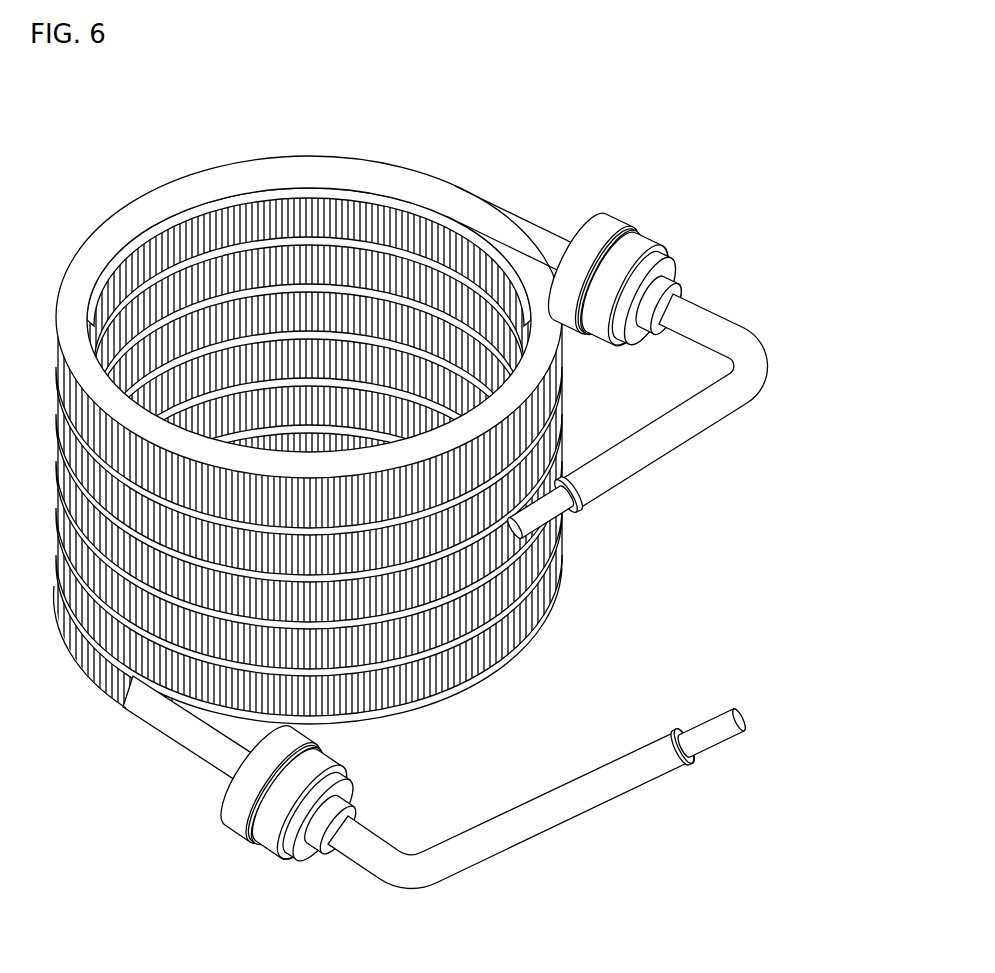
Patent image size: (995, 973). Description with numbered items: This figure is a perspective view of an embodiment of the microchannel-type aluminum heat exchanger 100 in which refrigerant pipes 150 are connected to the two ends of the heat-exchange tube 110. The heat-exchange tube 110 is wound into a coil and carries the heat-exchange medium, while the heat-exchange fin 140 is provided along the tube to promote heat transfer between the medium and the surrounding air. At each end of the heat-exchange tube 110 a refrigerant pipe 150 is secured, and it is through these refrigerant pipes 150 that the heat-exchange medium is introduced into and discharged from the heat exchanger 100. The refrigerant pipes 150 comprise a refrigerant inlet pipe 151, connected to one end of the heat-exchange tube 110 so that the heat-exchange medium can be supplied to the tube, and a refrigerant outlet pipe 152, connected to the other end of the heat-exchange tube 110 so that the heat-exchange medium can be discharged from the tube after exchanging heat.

The microchannel-type aluminum heat exchanger 100 is at (158, 150).
The heat-exchange tube 110 is at (447, 174).
The heat-exchange fin 140 is at (355, 186).
The refrigerant pipes 150 is at (623, 205).
The refrigerant inlet pipe 151 is at (642, 230).
The refrigerant outlet pipe 152 is at (682, 437).